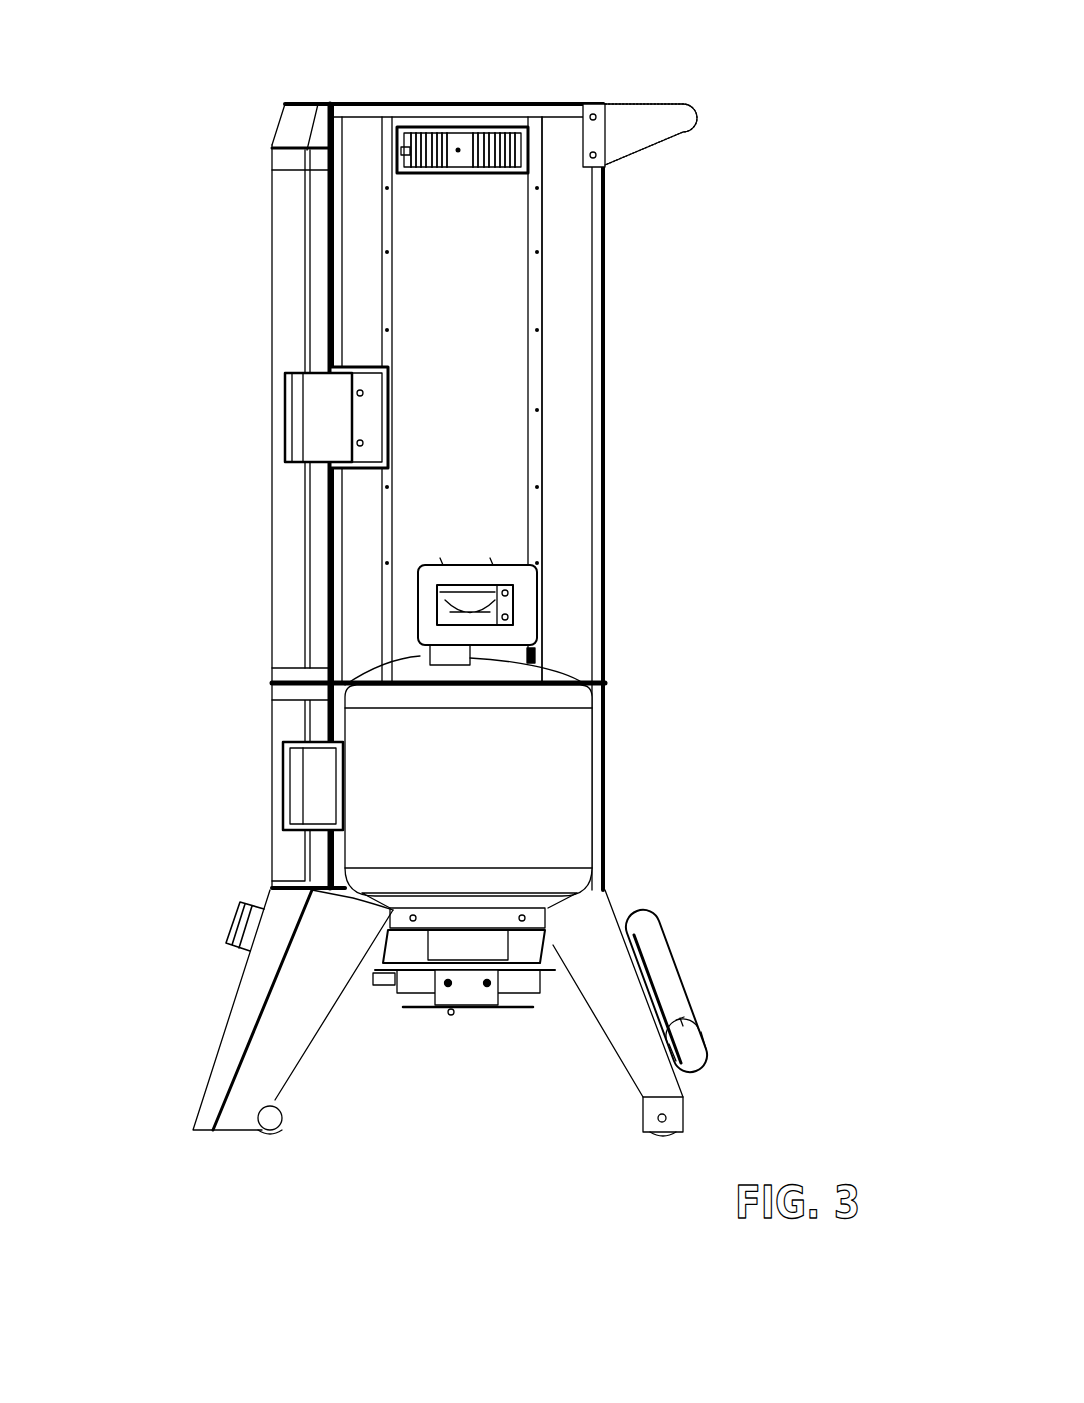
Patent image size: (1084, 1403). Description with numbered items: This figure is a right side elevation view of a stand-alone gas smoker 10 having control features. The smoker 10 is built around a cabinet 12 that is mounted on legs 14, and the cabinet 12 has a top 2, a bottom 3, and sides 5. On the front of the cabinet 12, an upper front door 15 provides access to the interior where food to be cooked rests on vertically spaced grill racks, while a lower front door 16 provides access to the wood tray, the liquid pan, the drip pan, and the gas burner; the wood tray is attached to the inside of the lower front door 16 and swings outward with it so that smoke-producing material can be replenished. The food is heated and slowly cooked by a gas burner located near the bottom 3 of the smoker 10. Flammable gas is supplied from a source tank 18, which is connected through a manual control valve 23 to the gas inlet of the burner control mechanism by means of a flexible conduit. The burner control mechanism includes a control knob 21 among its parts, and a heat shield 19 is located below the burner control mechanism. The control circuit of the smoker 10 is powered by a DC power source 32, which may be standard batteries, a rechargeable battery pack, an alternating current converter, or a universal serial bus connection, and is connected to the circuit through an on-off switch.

The stand-alone gas smoker 10 is at (493, 591).
The top 2 is at (446, 100).
The bottom 3 is at (593, 882).
The sides 5 is at (565, 275).
The cabinet 12 is at (610, 505).
The legs 14 is at (287, 1057).
The upper front door 15 is at (290, 556).
The lower front door 16 is at (280, 727).
The source (tank) of flammable gas 18 is at (533, 715).
The heat shield 19 is at (472, 1010).
The control knob (stem) 21 is at (235, 920).
The manual control valve 23 is at (510, 598).
The DC power source 32 is at (676, 985).